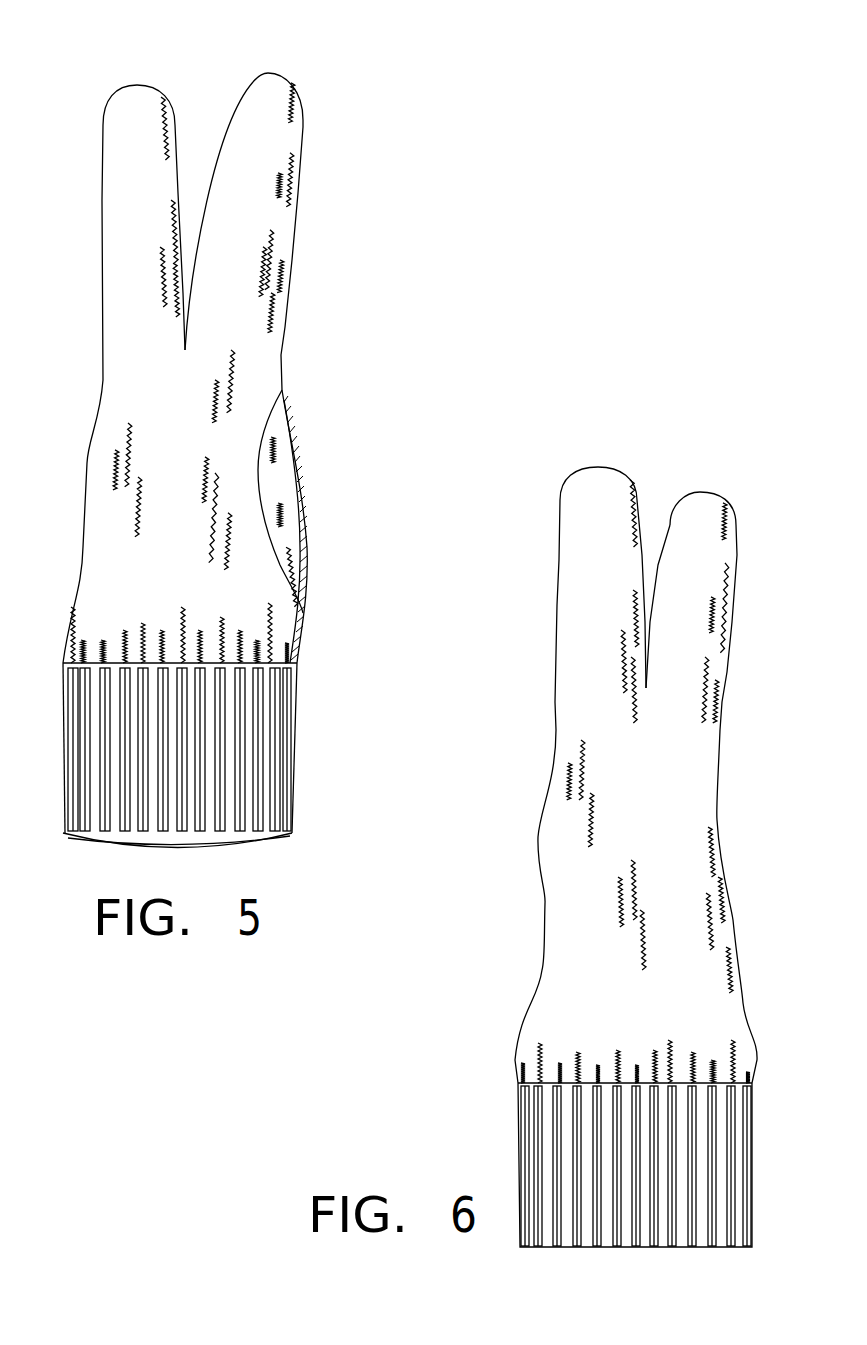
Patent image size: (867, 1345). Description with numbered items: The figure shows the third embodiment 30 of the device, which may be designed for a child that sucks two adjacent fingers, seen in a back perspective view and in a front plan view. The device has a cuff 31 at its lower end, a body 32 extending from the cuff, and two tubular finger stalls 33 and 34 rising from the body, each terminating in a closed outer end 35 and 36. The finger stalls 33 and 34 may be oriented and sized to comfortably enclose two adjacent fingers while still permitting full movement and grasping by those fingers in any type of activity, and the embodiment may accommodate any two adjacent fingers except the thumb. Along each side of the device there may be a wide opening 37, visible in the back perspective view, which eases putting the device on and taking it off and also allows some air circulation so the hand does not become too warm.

In FIG. 5, the third embodiment 30 is at (414, 306).
In FIG. 6, the third embodiment 30 is at (495, 895).
In FIG. 5, the cuff 31 is at (270, 747).
In FIG. 6, the cuff 31 is at (720, 1178).
In FIG. 5, the body 32 is at (108, 560).
In FIG. 6, the body 32 is at (680, 940).
In FIG. 5, the tubular finger stall 33 is at (265, 208).
In FIG. 6, the tubular finger stall 33 is at (582, 635).
In FIG. 5, the tubular finger stall 34 is at (128, 225).
In FIG. 6, the tubular finger stall 34 is at (693, 666).
In FIG. 5, the closed outer end 35 is at (270, 73).
In FIG. 6, the closed outer end 35 is at (600, 466).
In FIG. 5, the closed outer end 36 is at (137, 85).
In FIG. 6, the closed outer end 36 is at (700, 492).
In FIG. 5, the wide opening 37 is at (270, 478).